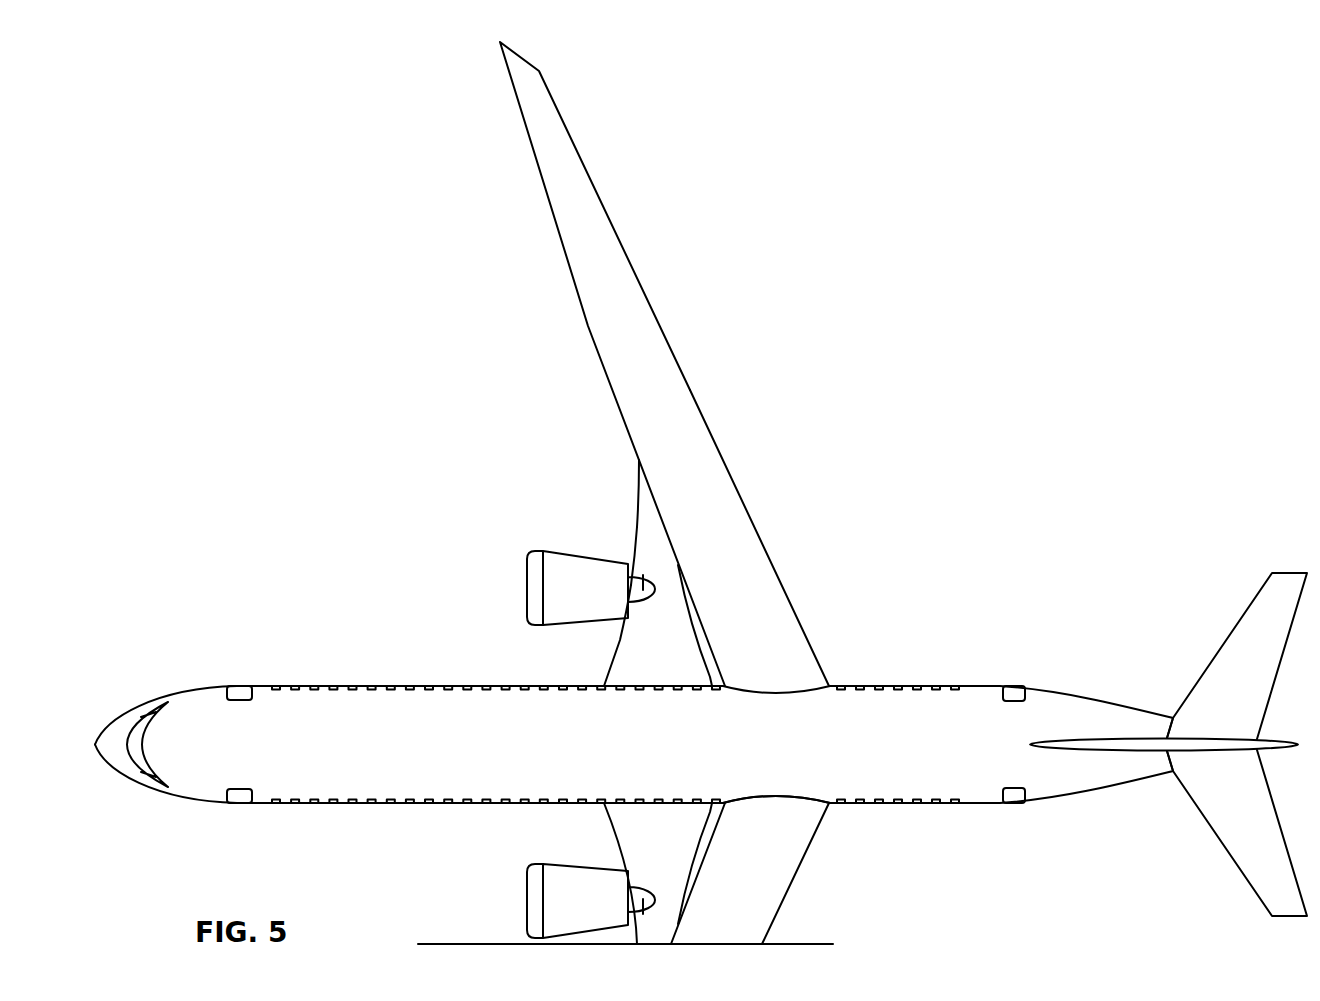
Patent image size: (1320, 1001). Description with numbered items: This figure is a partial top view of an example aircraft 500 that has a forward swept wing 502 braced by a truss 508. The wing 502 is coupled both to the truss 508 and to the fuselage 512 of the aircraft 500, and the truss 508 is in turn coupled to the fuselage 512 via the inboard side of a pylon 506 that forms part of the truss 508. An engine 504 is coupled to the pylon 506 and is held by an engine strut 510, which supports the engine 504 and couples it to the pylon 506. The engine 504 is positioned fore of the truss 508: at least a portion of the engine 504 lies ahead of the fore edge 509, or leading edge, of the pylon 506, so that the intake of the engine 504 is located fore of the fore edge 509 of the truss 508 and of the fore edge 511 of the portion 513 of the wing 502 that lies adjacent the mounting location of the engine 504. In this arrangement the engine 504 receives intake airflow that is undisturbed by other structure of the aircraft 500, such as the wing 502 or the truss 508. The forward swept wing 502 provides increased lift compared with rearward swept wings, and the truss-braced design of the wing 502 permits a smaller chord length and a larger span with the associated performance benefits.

The aircraft 500 is at (1100, 406).
The forward swept wing 502 is at (588, 326).
The engine 504 is at (562, 617).
The pylon 506 is at (643, 667).
The truss 508 is at (640, 486).
The fore edge of the pylon 509 is at (640, 511).
The engine strut 510 is at (643, 575).
The fore edge of the wing portion 511 is at (705, 623).
The fuselage 512 is at (848, 683).
The portion of the wing 513 is at (700, 490).